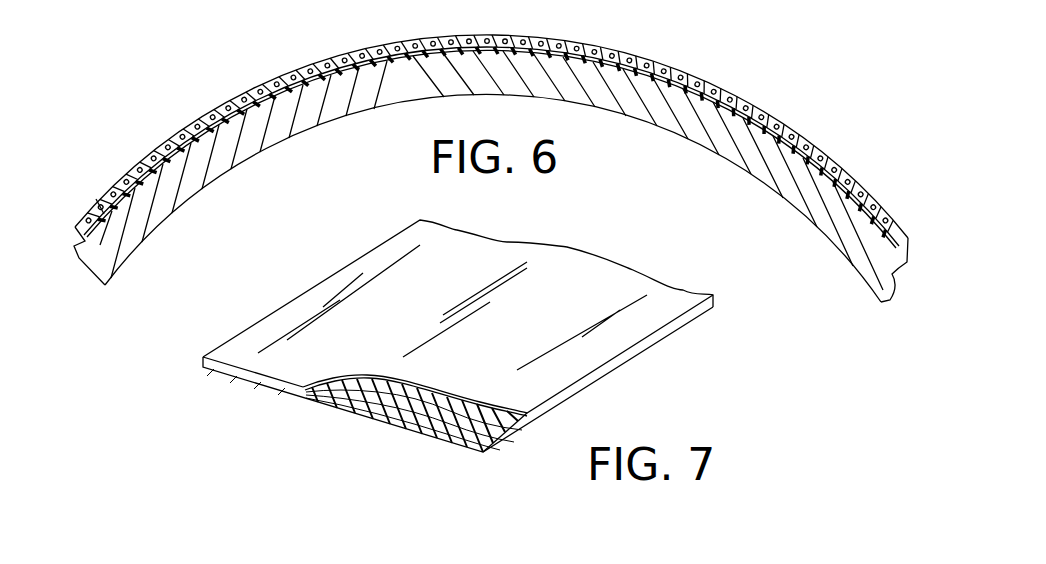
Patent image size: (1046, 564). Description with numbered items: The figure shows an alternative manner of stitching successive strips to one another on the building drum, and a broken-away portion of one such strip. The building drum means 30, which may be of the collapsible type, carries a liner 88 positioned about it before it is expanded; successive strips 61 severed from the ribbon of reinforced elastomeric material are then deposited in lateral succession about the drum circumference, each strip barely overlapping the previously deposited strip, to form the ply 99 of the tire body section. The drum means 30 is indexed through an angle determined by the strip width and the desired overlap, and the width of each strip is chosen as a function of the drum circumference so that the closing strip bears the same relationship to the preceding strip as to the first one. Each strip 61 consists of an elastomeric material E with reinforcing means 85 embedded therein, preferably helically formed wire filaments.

In FIG. 6, the drum means 30 is at (727, 151).
In FIG. 6, the strip 61 is at (241, 93).
In FIG. 7, the strip 61 is at (273, 308).
In FIG. 6, the reinforcing means 85 is at (377, 44).
In FIG. 7, the reinforcing means 85 is at (347, 401).
In FIG. 6, the liner 88 is at (80, 249).
In FIG. 6, the ply 99 is at (99, 203).
In FIG. 7, the elastomeric material E is at (481, 434).